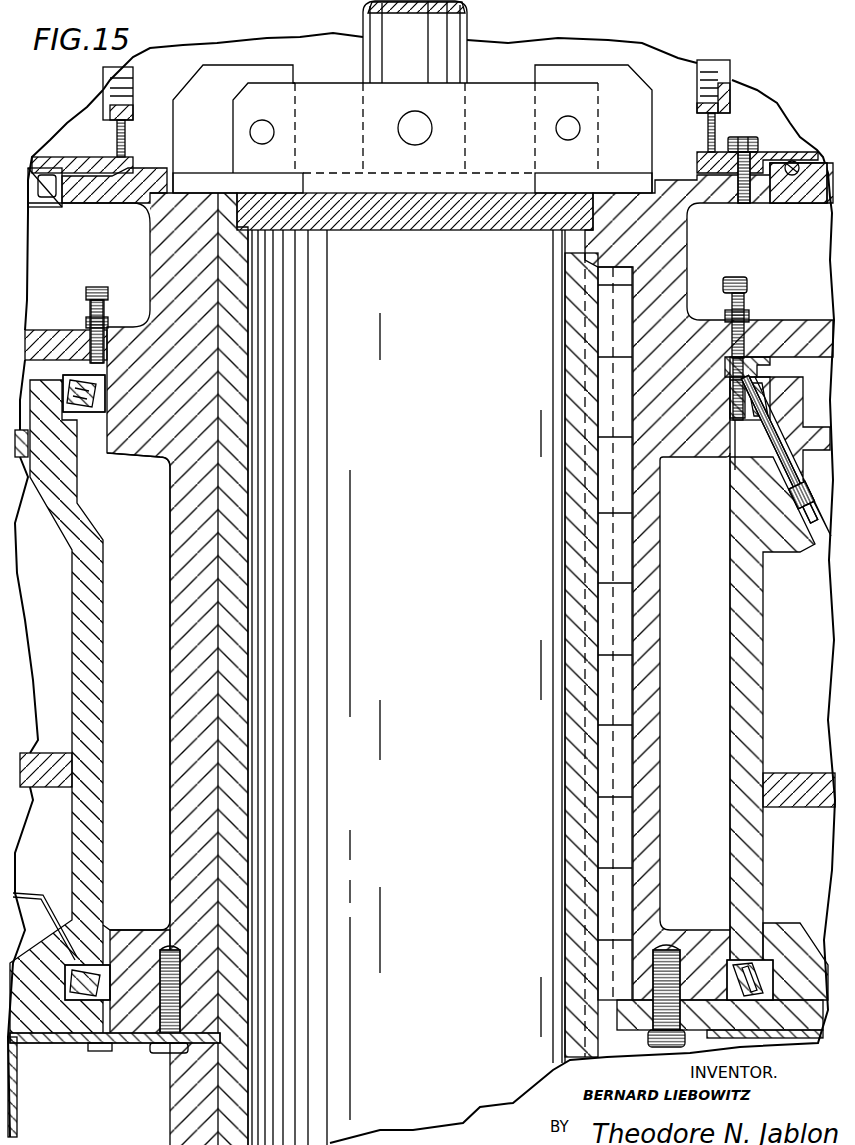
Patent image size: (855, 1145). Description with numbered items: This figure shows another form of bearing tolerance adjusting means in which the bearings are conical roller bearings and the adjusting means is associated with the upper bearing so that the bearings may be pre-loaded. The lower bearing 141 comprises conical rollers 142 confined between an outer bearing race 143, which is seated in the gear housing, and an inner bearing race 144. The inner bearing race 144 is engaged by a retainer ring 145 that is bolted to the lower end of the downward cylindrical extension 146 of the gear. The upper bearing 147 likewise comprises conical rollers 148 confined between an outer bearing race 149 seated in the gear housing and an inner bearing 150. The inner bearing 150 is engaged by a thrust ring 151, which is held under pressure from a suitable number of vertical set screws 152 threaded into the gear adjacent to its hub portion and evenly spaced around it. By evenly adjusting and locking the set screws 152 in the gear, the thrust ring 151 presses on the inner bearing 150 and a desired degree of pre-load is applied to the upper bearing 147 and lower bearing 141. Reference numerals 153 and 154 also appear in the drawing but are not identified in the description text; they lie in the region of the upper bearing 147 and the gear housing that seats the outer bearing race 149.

The lower bearing 141 is at (752, 946).
The conical rollers 142 is at (748, 972).
The outer bearing race 143 is at (762, 976).
The inner bearing race 144 is at (730, 963).
The retainer ring 145 is at (720, 1019).
The downward cylindrical extension 146 is at (657, 838).
The upper bearing 147 is at (735, 420).
The conical rollers 148 is at (745, 400).
The outer bearing race 149 is at (770, 386).
The inner bearing 150 is at (728, 381).
The thrust ring 151 is at (746, 355).
The vertical set screws 152 is at (736, 277).
The chamber 153 is at (692, 447).
The housing 154 is at (787, 332).